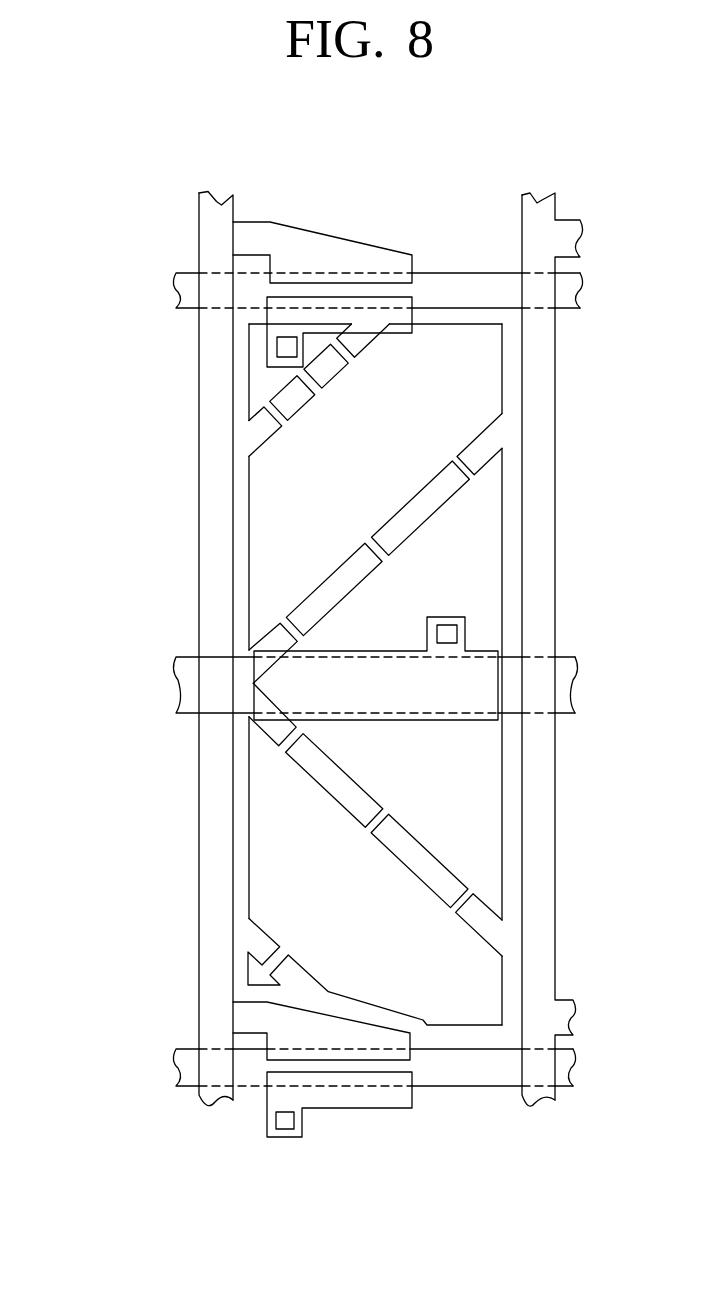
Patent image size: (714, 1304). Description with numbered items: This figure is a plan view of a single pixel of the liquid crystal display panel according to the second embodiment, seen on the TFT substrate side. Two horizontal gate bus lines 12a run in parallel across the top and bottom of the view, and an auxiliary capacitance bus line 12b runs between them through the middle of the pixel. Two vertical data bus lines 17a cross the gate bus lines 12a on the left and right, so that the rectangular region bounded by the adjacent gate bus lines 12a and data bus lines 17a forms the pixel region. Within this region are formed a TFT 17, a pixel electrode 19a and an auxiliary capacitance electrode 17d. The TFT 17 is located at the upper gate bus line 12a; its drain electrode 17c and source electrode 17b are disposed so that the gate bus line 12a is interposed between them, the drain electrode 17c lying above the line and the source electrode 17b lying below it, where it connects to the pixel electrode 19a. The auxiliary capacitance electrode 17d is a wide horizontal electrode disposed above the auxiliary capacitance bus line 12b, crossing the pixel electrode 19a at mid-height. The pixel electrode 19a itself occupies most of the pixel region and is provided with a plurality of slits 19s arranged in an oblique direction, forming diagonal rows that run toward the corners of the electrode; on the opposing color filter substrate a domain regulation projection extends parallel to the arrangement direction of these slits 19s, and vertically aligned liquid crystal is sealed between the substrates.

The data bus line 17a is at (218, 206).
The gate bus line 12a is at (176, 289).
The auxiliary capacitance bus line 12b is at (176, 687).
The TFT 17 is at (365, 644).
The drain electrode 17c is at (340, 249).
The source electrode 17b is at (388, 334).
The auxiliary capacitance electrode 17d is at (435, 721).
The pixel electrode 19a is at (377, 621).
The slit 19s is at (427, 505).